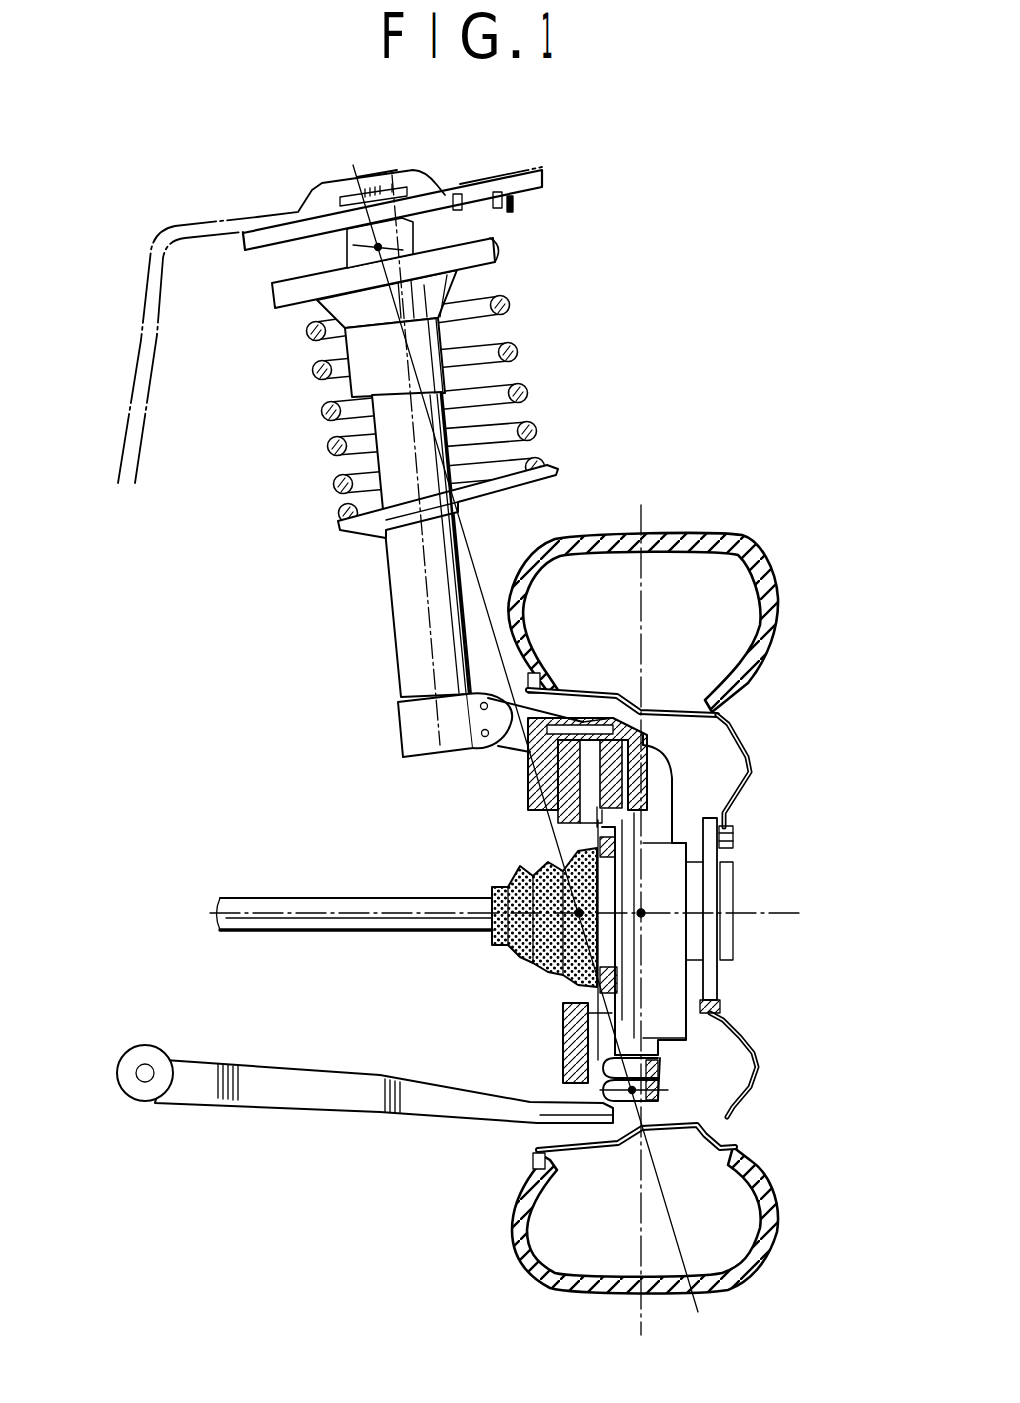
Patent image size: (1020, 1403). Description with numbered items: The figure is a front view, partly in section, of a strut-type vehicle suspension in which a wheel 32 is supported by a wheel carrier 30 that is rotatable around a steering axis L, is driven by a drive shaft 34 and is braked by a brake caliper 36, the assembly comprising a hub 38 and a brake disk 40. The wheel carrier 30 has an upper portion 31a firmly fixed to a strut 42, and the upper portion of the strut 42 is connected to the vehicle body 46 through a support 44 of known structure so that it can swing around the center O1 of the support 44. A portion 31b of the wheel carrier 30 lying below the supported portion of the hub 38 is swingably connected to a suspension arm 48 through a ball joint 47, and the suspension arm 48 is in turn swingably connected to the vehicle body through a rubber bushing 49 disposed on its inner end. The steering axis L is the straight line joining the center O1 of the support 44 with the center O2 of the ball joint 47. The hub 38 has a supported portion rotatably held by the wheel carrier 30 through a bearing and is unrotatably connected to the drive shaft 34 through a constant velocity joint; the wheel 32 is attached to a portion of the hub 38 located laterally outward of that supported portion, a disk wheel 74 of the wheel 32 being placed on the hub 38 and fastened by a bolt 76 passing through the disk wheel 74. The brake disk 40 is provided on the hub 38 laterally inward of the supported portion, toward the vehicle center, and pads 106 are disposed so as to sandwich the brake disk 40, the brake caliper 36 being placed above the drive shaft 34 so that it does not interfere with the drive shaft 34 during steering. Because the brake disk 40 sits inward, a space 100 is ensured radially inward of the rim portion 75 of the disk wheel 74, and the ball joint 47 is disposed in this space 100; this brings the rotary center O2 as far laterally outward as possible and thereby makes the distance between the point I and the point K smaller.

The steering axis L is at (440, 337).
The strut 42 is at (396, 596).
The upper portion of the wheel carrier 31a is at (507, 745).
The support 44 is at (512, 204).
The vehicle body 46 is at (135, 327).
The wheel 32 is at (760, 751).
The rim portion 75 is at (628, 694).
The space 100 is at (623, 1110).
The disk wheel 74 is at (752, 775).
The wheel carrier 30 is at (657, 800).
The pads 106 is at (590, 732).
The brake caliper 36 is at (637, 725).
The hub 38 is at (697, 945).
The bolt 76 is at (735, 840).
The brake disk 40 is at (562, 1036).
The drive shaft 34 is at (293, 926).
The point K is at (578, 912).
The ball joint 47 is at (660, 1097).
The portion of the wheel carrier below the supported portion 31b is at (657, 1052).
The suspension arm 48 is at (302, 1090).
The rubber bushing 49 is at (143, 1098).
The center of the support O1 is at (380, 245).
The center of the ball joint O2 is at (668, 1088).
The point I is at (645, 918).